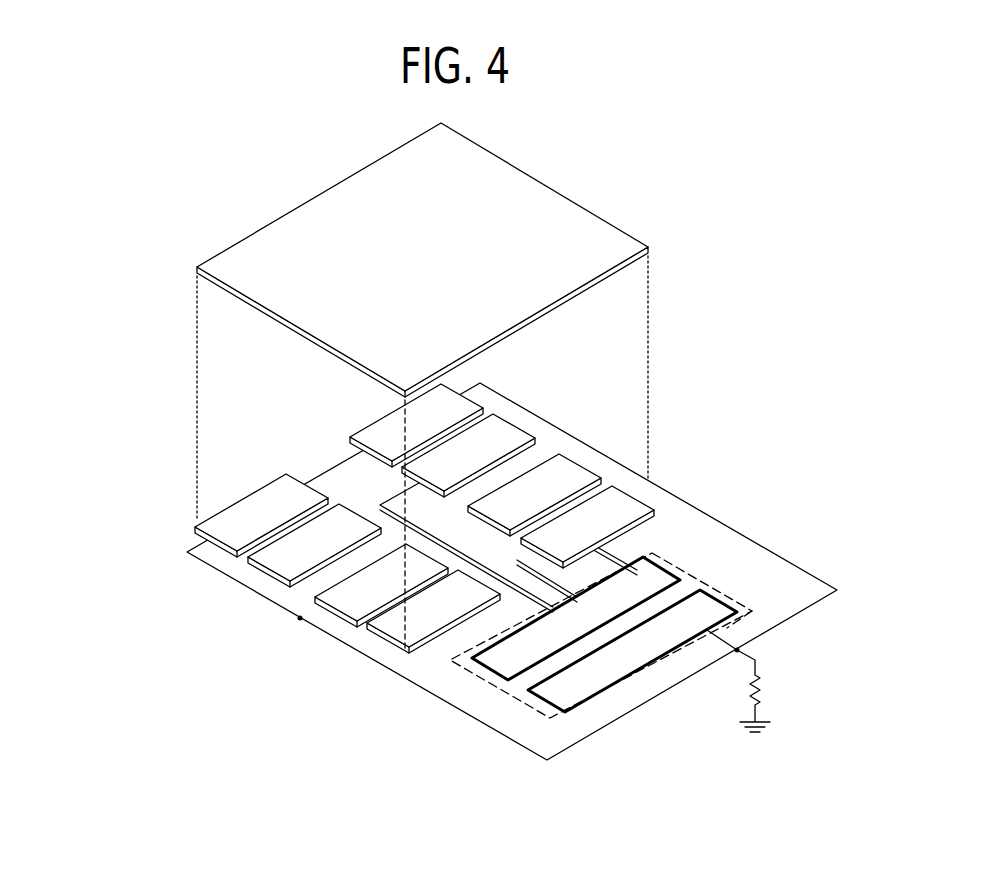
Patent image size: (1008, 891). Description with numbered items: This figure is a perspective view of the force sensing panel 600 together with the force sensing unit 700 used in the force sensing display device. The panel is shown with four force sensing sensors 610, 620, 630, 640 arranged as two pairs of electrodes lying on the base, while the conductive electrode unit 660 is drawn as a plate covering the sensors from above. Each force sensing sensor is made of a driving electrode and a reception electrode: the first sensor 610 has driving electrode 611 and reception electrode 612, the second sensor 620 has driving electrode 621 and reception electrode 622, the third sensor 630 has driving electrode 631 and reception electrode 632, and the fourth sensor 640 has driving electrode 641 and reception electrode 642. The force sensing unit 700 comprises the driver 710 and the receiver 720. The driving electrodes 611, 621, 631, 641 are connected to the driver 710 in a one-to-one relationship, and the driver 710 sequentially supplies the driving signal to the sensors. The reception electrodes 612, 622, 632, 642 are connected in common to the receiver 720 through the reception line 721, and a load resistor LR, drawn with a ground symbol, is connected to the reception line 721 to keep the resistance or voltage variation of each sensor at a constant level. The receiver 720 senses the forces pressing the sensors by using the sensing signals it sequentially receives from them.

The force sensing panel 600 is at (145, 181).
The electrode unit 660 is at (552, 187).
The force sensing sensor 610 is at (584, 381).
The driving electrode 611 is at (513, 427).
The reception electrode 612 is at (462, 395).
The force sensing sensor 620 is at (704, 450).
The driving electrode 621 is at (645, 490).
The reception electrode 622 is at (602, 452).
The force sensing sensor 630 is at (236, 656).
The driving electrode 631 is at (273, 578).
The reception electrode 632 is at (222, 540).
The force sensing sensor 640 is at (355, 724).
The driving electrode 641 is at (392, 643).
The reception electrode 642 is at (337, 617).
The force sensing unit 700 is at (638, 680).
The driver 710 is at (657, 563).
The receiver 720 is at (730, 603).
The reception line 721 is at (462, 715).